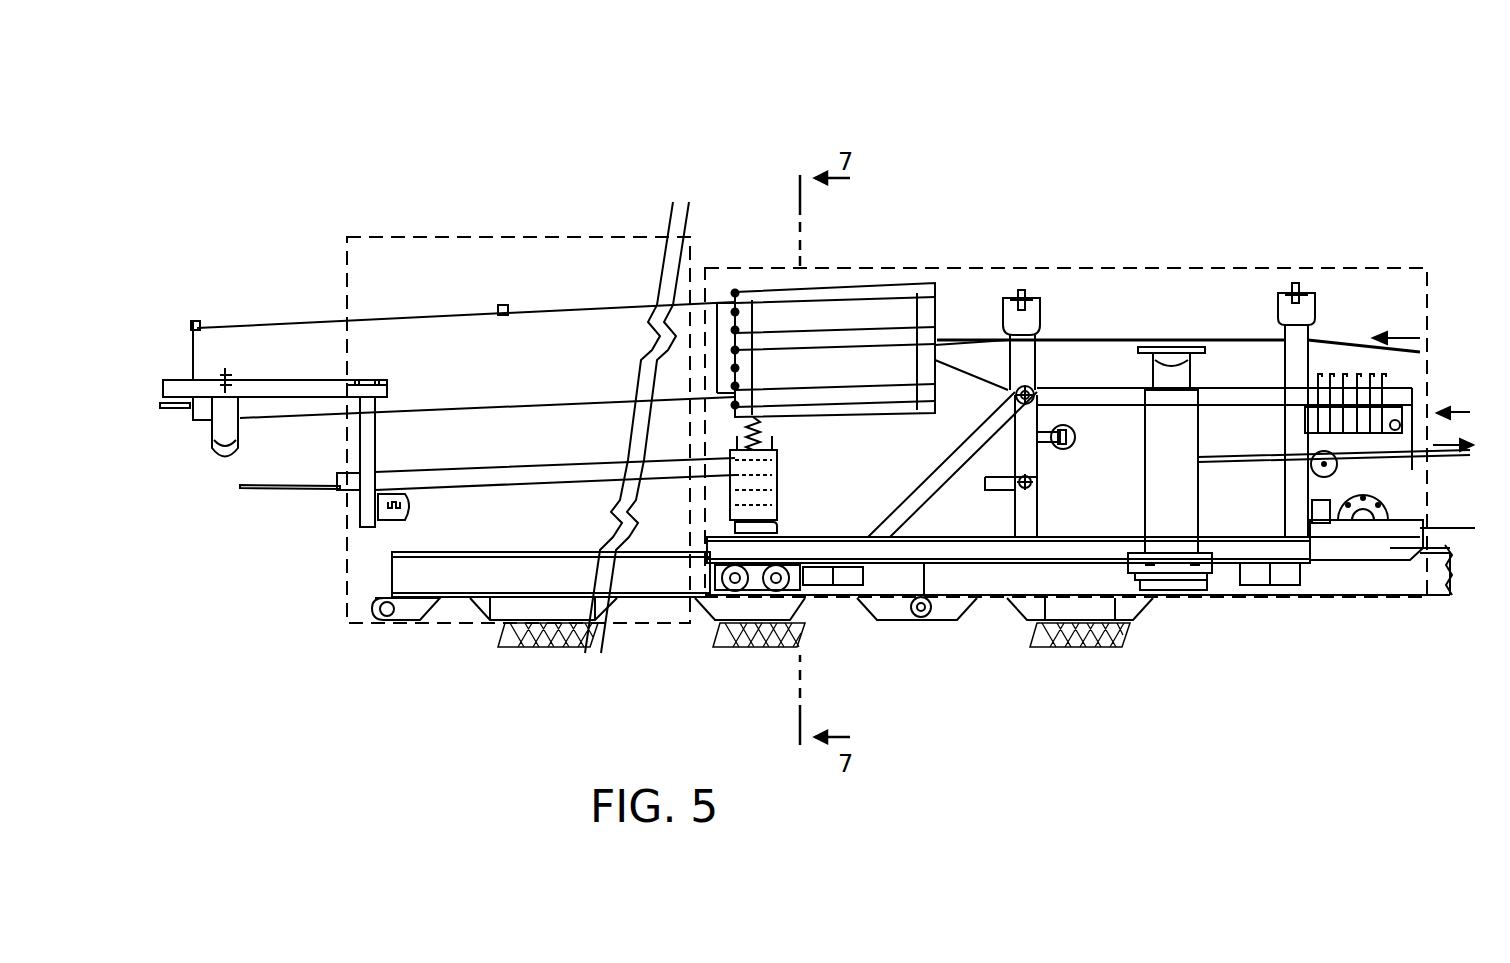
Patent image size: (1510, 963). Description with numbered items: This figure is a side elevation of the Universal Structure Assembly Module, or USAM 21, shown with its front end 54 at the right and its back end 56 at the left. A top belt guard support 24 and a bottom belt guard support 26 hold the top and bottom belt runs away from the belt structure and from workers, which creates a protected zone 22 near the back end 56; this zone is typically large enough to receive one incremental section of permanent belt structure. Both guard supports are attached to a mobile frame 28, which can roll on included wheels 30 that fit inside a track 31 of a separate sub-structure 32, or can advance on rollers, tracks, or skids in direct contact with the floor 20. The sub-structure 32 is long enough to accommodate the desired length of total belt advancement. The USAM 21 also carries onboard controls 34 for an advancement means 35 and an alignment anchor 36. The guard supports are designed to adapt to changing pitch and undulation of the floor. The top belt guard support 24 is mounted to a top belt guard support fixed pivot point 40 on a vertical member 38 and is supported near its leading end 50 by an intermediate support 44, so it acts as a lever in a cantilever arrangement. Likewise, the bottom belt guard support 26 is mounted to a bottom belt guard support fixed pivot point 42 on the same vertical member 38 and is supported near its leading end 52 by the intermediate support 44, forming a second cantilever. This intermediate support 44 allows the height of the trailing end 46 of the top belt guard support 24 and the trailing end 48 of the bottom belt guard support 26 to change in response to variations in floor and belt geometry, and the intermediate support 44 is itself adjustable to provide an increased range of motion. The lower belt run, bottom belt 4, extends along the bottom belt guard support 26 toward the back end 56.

The bottom belt 4 is at (272, 488).
The floor 20 is at (810, 632).
The USAM 21 is at (375, 192).
The protected zone 22 is at (479, 237).
The top belt guard support 24 is at (537, 313).
The bottom belt guard support 26 is at (437, 472).
The mobile frame 28 is at (1055, 268).
The wheels 30 is at (765, 592).
The track 31 is at (520, 552).
The sub-structure 32 is at (480, 622).
The onboard controls 34 is at (1380, 378).
The advancement means 35 is at (1392, 500).
The alignment anchor 36 is at (1210, 592).
The vertical member 38 is at (1012, 512).
The top belt guard support fixed pivot point 40 is at (1033, 392).
The bottom belt guard support fixed pivot point 42 is at (1030, 488).
The intermediate support 44 is at (765, 475).
The trailing end 46 is at (207, 420).
The trailing end 48 is at (340, 490).
The leading end 50 is at (940, 315).
The leading end 52 is at (1040, 462).
The front end 54 is at (1470, 418).
The back end 56 is at (190, 351).